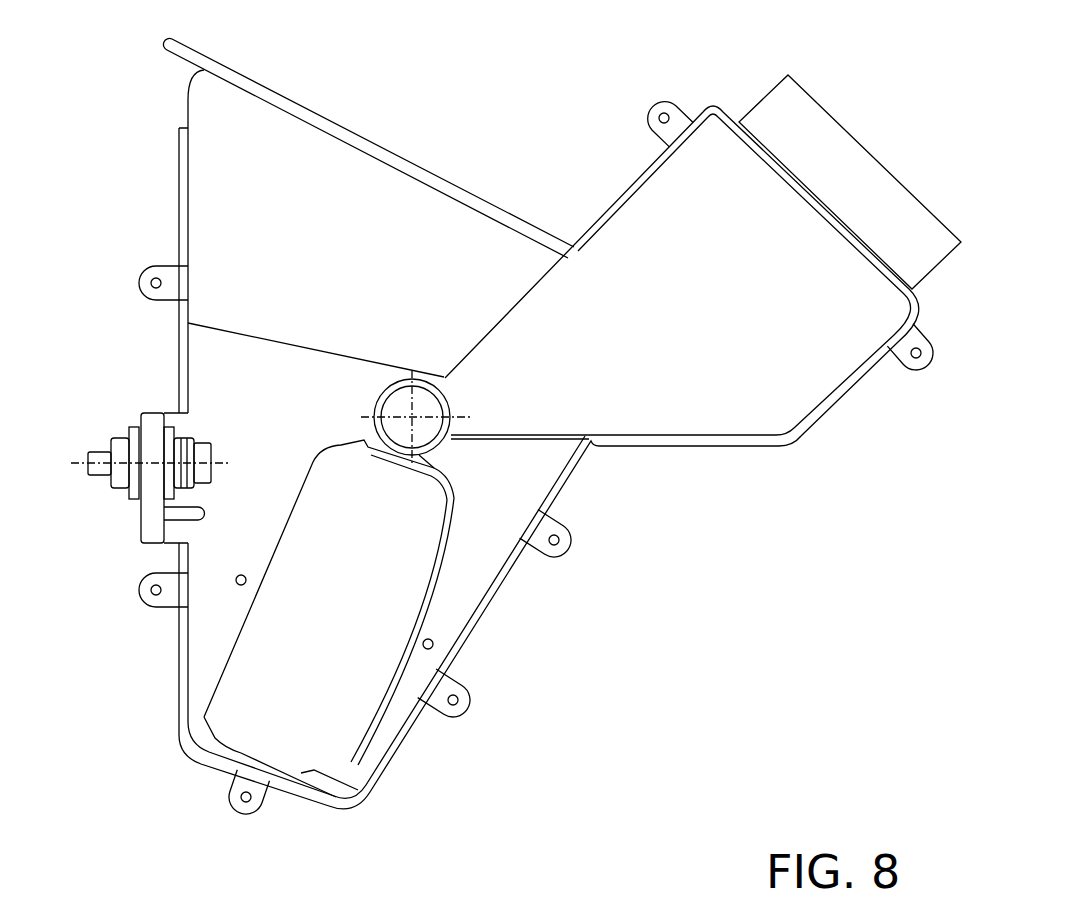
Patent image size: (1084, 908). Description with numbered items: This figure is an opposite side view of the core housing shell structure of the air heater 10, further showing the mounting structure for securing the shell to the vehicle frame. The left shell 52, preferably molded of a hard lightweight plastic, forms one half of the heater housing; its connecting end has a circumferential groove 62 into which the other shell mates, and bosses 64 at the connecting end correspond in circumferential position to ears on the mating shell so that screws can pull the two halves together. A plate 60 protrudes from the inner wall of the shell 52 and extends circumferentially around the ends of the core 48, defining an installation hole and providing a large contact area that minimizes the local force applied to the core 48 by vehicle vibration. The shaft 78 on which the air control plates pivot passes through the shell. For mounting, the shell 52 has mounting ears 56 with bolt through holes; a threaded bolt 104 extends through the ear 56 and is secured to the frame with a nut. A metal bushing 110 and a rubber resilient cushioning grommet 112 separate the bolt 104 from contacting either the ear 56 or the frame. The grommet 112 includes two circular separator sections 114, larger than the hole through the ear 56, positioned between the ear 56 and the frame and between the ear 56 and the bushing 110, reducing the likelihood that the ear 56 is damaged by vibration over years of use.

The air heater 10 is at (438, 86).
The core 48 is at (330, 723).
The left shell 52 is at (212, 222).
The mounting ear 56 is at (143, 413).
The plate 60 is at (235, 653).
The circumferential groove 62 is at (712, 446).
The boss 64 is at (562, 526).
The shaft 78 is at (430, 428).
The threaded bolt 104 is at (88, 477).
The bushing 110 is at (183, 487).
The resilient cushioning grommet 112 is at (118, 443).
The separator section 114 is at (168, 452).